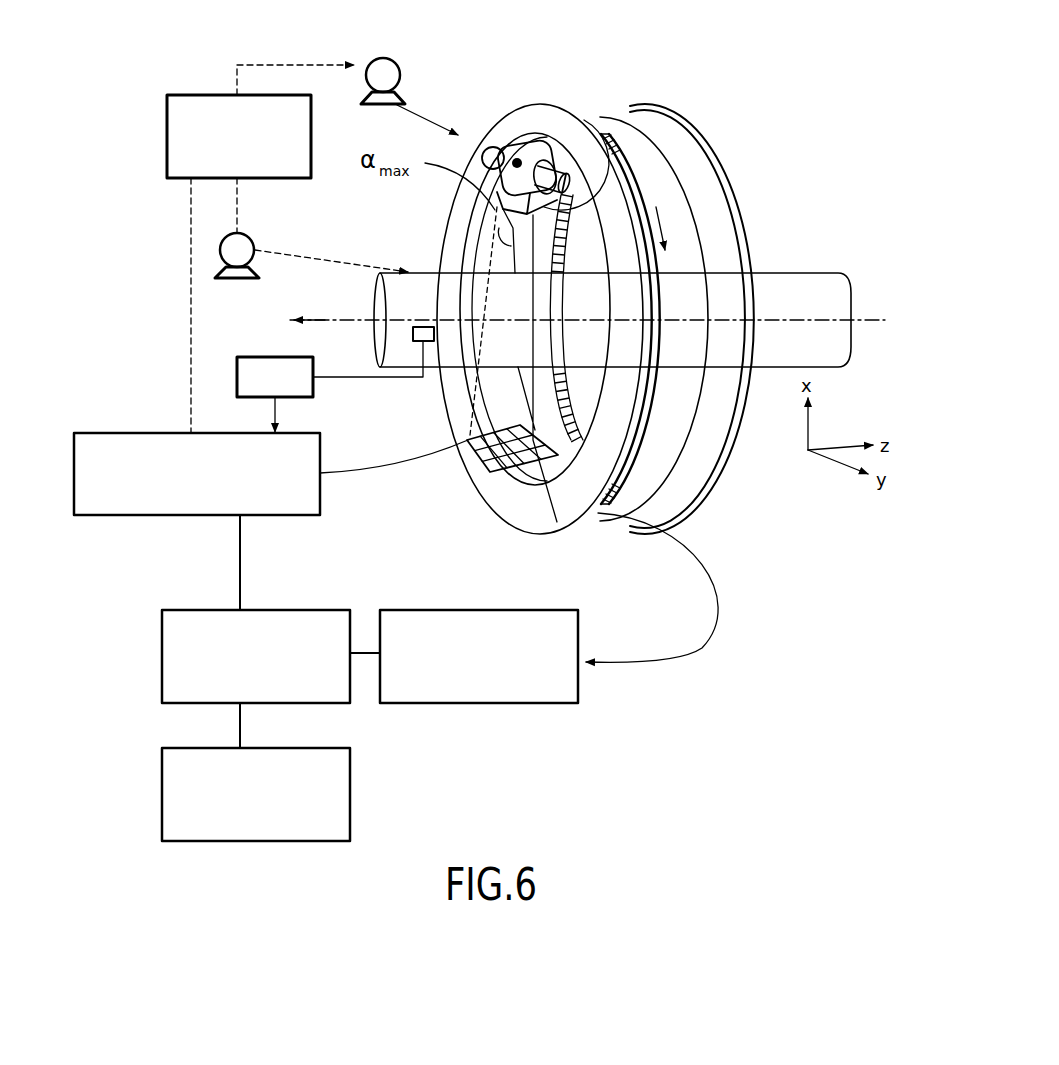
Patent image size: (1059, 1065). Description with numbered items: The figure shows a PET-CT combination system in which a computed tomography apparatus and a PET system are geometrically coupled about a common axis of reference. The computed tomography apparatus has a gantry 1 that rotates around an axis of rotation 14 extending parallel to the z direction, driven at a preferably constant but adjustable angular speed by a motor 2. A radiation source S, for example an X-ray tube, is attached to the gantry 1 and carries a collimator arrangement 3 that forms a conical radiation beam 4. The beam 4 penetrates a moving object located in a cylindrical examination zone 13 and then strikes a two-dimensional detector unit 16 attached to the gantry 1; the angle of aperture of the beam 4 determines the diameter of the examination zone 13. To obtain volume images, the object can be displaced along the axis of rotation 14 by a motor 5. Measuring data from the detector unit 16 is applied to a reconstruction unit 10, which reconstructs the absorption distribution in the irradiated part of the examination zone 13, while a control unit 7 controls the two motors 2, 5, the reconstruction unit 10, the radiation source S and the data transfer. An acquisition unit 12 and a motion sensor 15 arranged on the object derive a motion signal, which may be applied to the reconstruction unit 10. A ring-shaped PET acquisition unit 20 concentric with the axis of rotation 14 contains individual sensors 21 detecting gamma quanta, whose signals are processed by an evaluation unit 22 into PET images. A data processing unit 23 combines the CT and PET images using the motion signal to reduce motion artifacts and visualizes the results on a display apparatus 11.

The gantry 1 is at (517, 500).
The motor 2 is at (392, 58).
The collimator arrangement 3 is at (607, 132).
The radiation beam 4 is at (557, 522).
The motor 5 is at (252, 240).
The control unit 7 is at (167, 137).
The reconstruction unit 10 is at (95, 433).
The display apparatus 11 is at (162, 795).
The acquisition unit 12 is at (274, 357).
The examination zone 13 is at (428, 289).
The axis of rotation 14 is at (305, 318).
The motion sensor 15 is at (412, 334).
The detector unit 16 is at (472, 470).
The PET acquisition unit 20 is at (717, 223).
The sensors 21 is at (610, 513).
The evaluation unit 22 is at (380, 628).
The data processing unit 23 is at (162, 652).
The radiation source S is at (528, 147).